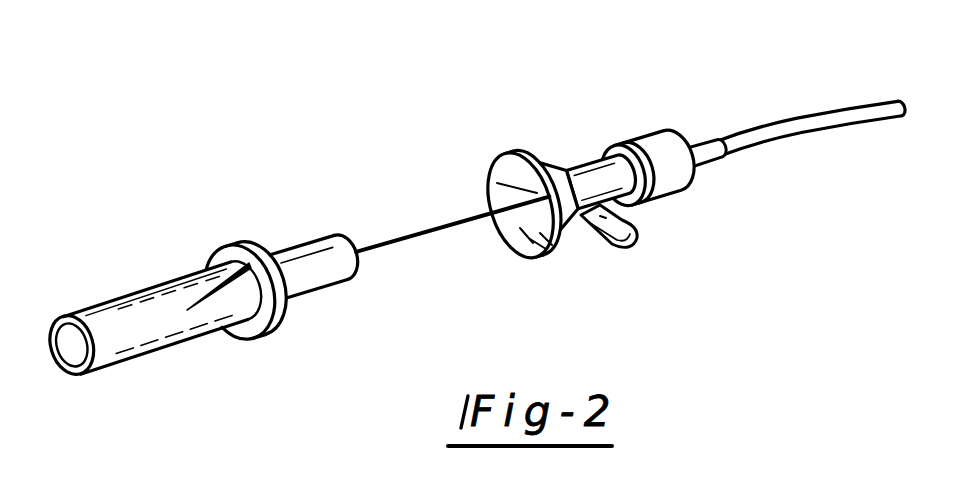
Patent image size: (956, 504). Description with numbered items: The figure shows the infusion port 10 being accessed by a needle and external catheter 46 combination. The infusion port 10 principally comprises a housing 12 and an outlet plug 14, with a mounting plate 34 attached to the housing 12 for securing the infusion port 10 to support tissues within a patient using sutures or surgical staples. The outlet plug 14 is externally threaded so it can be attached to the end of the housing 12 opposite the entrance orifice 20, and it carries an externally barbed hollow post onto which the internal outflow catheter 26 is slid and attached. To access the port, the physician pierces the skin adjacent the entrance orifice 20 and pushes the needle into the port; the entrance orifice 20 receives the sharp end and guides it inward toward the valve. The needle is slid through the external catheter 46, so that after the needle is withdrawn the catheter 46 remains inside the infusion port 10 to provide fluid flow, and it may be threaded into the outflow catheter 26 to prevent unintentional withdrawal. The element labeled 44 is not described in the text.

The infusion port 10 is at (575, 167).
The housing 12 is at (650, 148).
The outlet plug 14 is at (707, 180).
The entrance orifice 20 is at (520, 262).
The outflow catheter 26 is at (803, 121).
The mounting plate 34 is at (637, 231).
The needle sheath 44 is at (153, 355).
The external catheter 46 is at (317, 293).